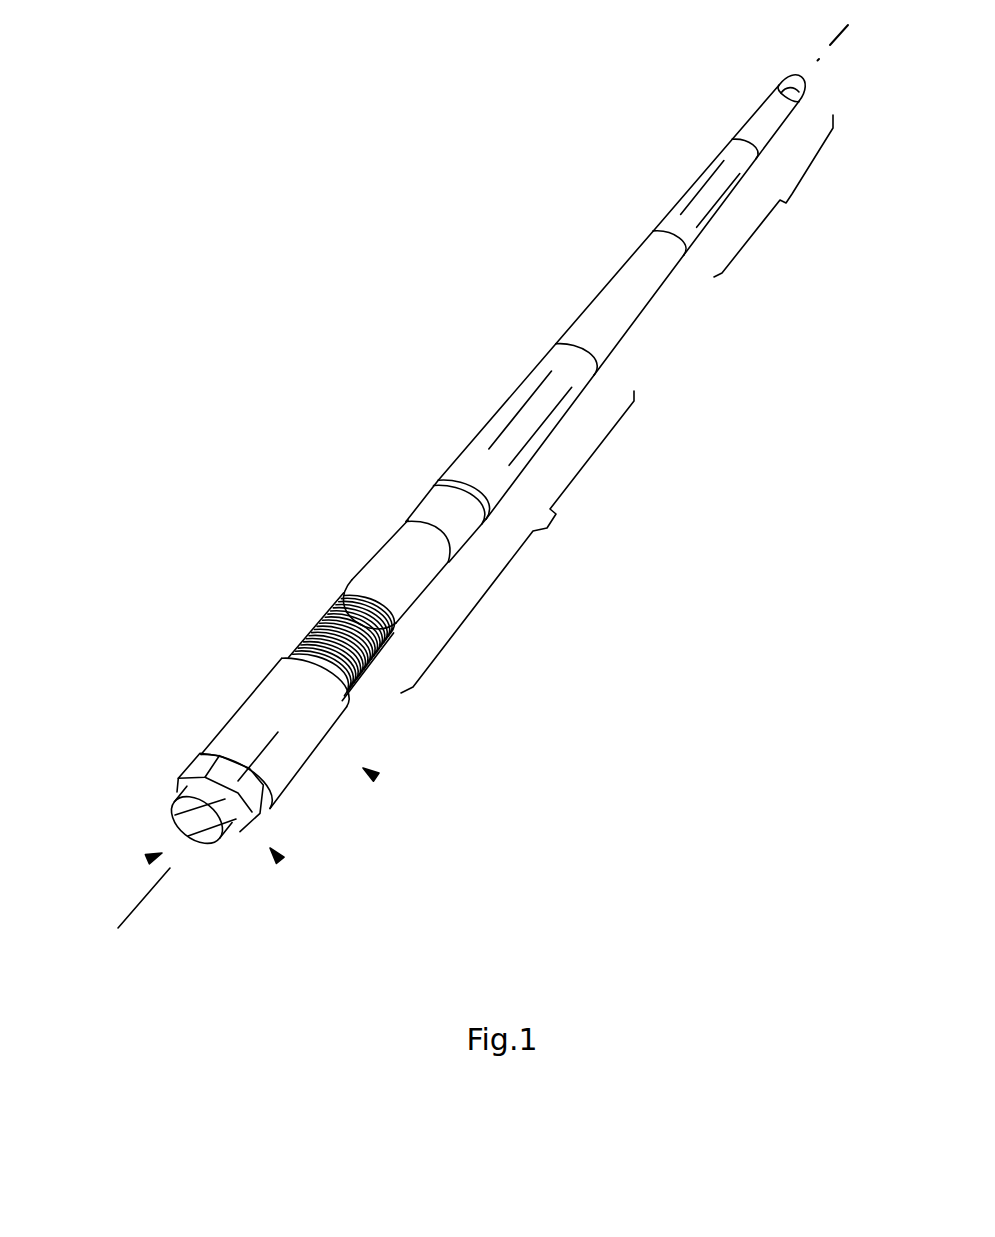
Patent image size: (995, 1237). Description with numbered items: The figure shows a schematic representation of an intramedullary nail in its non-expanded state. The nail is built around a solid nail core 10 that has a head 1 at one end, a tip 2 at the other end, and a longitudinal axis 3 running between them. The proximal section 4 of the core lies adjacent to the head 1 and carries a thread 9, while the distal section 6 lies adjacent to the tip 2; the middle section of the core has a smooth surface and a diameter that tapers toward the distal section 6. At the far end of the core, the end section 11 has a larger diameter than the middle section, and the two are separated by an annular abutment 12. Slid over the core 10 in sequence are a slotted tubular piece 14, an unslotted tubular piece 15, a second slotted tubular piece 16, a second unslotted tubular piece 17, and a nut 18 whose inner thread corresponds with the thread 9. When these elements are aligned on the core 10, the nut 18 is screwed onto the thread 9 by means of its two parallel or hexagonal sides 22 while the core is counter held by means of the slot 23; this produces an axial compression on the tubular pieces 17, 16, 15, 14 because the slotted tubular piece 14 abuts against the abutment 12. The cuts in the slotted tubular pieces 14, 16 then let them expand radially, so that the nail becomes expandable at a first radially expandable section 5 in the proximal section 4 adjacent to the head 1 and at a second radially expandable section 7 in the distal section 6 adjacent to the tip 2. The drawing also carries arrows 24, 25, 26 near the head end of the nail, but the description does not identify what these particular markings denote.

The head 1 is at (226, 824).
The tip 2 is at (790, 88).
The longitudinal axis 3 is at (838, 37).
The proximal section 4 is at (556, 547).
The first radially expandable section 5 is at (466, 443).
The distal section 6 is at (786, 234).
The second radially expandable section 7 is at (685, 193).
The thread 9 is at (320, 638).
The nail core 10 is at (437, 512).
The end section 11 is at (762, 122).
The annular abutment 12 is at (732, 138).
The slotted tubular piece 14 is at (676, 222).
The unslotted tubular piece 15 is at (605, 308).
The slotted tubular piece 16 is at (516, 400).
The unslotted tubular piece 17 is at (410, 563).
The nut 18 is at (258, 708).
The hexagonal sides 22 is at (257, 815).
The slot 23 is at (201, 835).
The direction arrow 24 is at (363, 768).
The direction arrow 25 is at (270, 848).
The direction arrow 26 is at (162, 853).